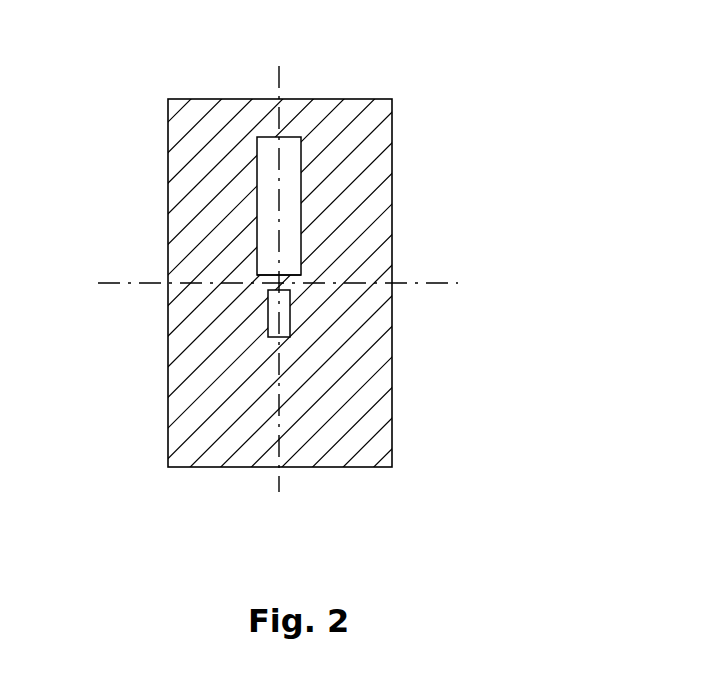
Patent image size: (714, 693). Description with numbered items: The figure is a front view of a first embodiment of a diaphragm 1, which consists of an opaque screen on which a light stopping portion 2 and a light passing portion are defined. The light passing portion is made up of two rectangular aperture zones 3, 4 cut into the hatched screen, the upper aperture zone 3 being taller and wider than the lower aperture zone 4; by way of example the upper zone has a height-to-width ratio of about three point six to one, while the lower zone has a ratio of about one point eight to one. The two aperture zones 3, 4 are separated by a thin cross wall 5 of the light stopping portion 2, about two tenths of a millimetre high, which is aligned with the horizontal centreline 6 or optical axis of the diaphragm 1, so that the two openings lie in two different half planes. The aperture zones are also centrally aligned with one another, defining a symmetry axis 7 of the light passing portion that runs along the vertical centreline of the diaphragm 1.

The diaphragm 1 is at (440, 190).
The light stopping portion 2 is at (360, 158).
The aperture zone 3 is at (270, 215).
The aperture zone 4 is at (277, 318).
The cross wall 5 is at (273, 283).
The horizontal centreline 6 is at (423, 285).
The symmetry axis 7 is at (283, 483).